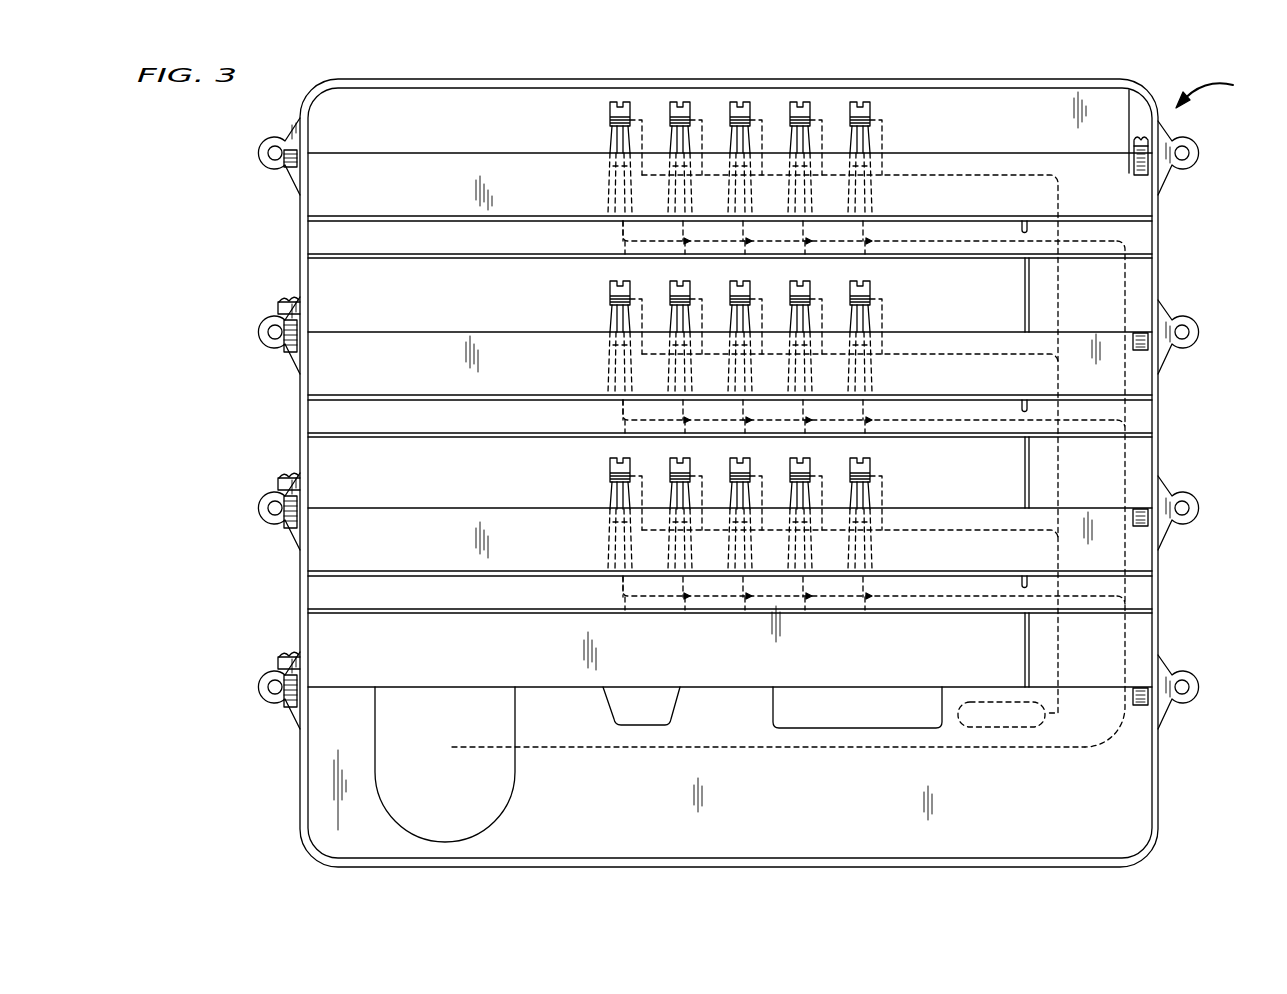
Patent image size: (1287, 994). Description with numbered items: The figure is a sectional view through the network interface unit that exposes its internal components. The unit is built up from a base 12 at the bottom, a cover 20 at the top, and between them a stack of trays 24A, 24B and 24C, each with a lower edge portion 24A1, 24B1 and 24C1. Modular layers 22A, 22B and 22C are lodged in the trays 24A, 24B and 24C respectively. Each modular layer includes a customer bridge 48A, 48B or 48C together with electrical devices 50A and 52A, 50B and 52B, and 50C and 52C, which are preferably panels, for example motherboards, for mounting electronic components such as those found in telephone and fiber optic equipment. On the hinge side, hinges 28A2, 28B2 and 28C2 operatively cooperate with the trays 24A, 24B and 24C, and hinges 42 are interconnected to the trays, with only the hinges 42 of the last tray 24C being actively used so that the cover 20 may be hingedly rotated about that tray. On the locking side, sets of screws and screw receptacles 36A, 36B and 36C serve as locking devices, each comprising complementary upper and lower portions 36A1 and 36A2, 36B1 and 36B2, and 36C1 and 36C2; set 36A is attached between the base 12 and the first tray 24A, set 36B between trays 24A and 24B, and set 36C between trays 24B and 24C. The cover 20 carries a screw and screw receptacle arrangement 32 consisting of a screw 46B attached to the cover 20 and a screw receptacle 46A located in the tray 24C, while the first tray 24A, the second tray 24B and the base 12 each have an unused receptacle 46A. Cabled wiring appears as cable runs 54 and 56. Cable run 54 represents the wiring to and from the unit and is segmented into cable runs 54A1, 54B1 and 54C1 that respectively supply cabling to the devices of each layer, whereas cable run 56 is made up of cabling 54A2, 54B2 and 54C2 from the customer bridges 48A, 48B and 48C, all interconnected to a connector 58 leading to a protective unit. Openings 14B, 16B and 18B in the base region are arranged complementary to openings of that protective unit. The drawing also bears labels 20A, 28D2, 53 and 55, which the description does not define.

The base 12 is at (1160, 822).
The cover 20 is at (485, 79).
The top mounting wall 20A is at (441, 152).
The screw and screw receptacle arrangement 32 is at (1216, 90).
The opening 14B is at (518, 777).
The opening 16B is at (641, 727).
The opening 18B is at (856, 729).
The modular layer 22A is at (774, 484).
The modular layer 22B is at (777, 308).
The modular layer 22C is at (943, 121).
The tray 24A is at (768, 585).
The tray 24B is at (768, 410).
The tray 24C is at (1140, 222).
The lower edge portion 24A1 is at (441, 686).
The lower edge portion 24B1 is at (730, 487).
The lower edge portion 24C1 is at (730, 310).
The hinge 28A2 is at (1194, 706).
The hinge 28B2 is at (1194, 528).
The hinge 28C2 is at (1194, 352).
The left mounting ear D2 28D2 is at (268, 153).
The set of screws and screw receptacles 36A is at (270, 687).
The upper portion 36A1 is at (285, 655).
The lower portion 36A2 is at (292, 717).
The set of screws and screw receptacles 36B is at (270, 508).
The upper portion 36B1 is at (285, 476).
The lower portion 36B2 is at (292, 538).
The set of screws and screw receptacles 36C is at (270, 332).
The upper portion 36C1 is at (285, 300).
The lower portion 36C2 is at (292, 362).
The hinge 42 is at (1193, 180).
The screw receptacle 46A is at (1133, 176).
The screw 46B is at (1147, 143).
The customer bridge 48A is at (709, 534).
The customer bridge 48B is at (709, 357).
The customer bridge 48C is at (610, 139).
The electrical device 50A is at (730, 549).
The electrical device 50B is at (730, 374).
The electrical device 50C is at (405, 216).
The electrical device 52A is at (730, 629).
The electrical device 52B is at (730, 452).
The electrical device 52C is at (406, 258).
The shelf edge 53 is at (1140, 259).
The cable run 54 is at (760, 749).
The cable run 54A1 is at (870, 566).
The cabling 54A2 is at (850, 502).
The cable run 54B1 is at (870, 390).
The cabling 54B2 is at (850, 325).
The cable run 54C1 is at (930, 240).
The cabling 54C2 is at (985, 174).
The partition hook 55 is at (1028, 233).
The cable run 56 is at (1058, 318).
The connector 58 is at (995, 728).